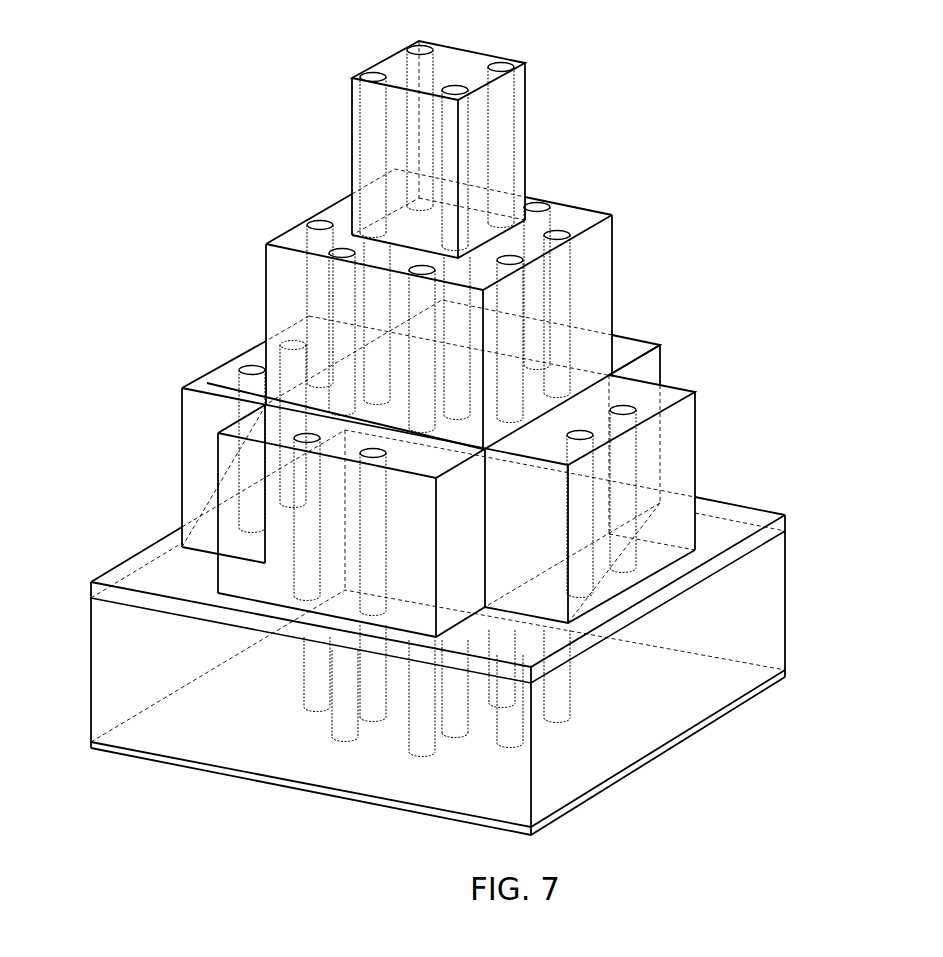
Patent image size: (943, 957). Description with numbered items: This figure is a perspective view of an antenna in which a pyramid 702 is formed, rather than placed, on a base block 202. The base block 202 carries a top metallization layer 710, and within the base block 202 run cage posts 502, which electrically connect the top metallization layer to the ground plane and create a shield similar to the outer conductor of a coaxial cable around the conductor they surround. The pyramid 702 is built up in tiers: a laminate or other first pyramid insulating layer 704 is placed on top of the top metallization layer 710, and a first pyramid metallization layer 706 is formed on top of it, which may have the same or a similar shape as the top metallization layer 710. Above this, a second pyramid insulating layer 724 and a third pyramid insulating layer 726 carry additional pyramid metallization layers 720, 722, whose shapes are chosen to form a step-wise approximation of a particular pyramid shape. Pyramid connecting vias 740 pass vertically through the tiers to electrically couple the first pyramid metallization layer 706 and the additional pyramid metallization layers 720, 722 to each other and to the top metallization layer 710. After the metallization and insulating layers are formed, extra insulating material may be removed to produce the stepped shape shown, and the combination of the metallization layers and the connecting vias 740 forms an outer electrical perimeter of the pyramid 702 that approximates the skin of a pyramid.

The pyramid 702 is at (125, 57).
The pyramid metallization layer 722 is at (468, 50).
The third pyramid insulating layer 726 is at (522, 132).
The pyramid metallization layer 720 is at (585, 216).
The second pyramid insulating layer 724 is at (612, 305).
The first pyramid metallization layer 706 is at (623, 405).
The first pyramid insulating layer 704 is at (692, 477).
The top metallization layer 710 is at (680, 595).
The base block 202 is at (788, 628).
The pyramid connecting vias 740 is at (377, 162).
The cage posts 502 is at (337, 717).